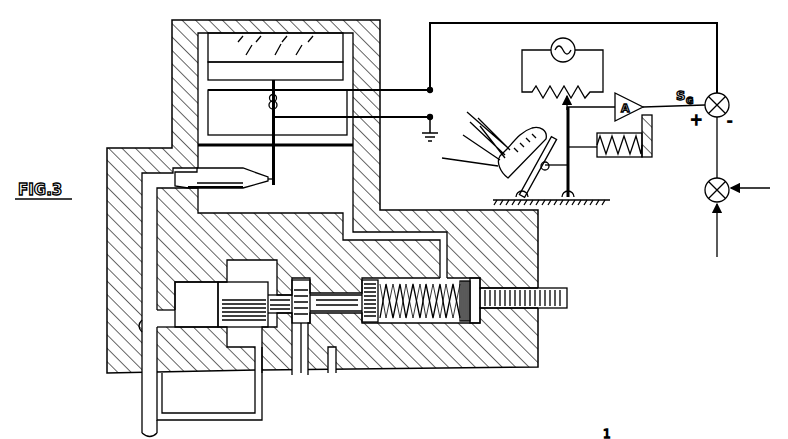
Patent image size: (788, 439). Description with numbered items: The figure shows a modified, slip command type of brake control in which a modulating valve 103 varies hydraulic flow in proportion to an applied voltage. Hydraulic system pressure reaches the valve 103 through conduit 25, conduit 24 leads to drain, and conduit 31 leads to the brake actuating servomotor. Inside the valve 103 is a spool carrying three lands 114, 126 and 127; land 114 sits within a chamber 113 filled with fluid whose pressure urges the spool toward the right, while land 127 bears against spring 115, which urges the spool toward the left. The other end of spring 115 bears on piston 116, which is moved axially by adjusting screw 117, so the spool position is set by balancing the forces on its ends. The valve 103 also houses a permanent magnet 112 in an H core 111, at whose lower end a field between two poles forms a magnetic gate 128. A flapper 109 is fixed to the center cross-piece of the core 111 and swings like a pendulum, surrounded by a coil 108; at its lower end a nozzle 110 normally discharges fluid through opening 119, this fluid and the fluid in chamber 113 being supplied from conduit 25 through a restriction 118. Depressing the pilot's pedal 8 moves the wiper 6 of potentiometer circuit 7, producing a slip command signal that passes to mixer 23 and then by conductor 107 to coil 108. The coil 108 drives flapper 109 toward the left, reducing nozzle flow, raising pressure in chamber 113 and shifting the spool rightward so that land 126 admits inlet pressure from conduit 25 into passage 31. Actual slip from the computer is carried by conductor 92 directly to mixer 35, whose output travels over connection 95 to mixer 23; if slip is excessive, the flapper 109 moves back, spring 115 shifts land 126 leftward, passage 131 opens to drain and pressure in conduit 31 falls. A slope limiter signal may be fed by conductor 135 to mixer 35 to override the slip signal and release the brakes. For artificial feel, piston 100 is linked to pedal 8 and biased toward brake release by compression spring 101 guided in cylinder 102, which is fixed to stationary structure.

The modulating valve 103 is at (186, 148).
The H core 111 is at (198, 50).
The permanent magnet 112 is at (296, 63).
The magnetic gate 128 is at (268, 130).
The coil 108 is at (278, 104).
The flapper 109 is at (277, 170).
The nozzle 110 is at (227, 189).
The opening 119 is at (273, 186).
The restriction 118 is at (141, 326).
The conduit 25 is at (143, 389).
The chamber 113 is at (193, 315).
The land 114 is at (228, 305).
The conduit 31 is at (291, 372).
The passage 131 is at (313, 350).
The conduit 24 is at (334, 372).
The land 126 is at (310, 292).
The land 127 is at (373, 323).
The spring 115 is at (415, 322).
The piston 116 is at (470, 323).
The adjusting screw 117 is at (545, 310).
The conductor 107 is at (612, 23).
The potentiometer circuit 7 is at (522, 70).
The wiper 6 is at (560, 107).
The pedal 8 is at (535, 173).
The piston 100 is at (588, 149).
The compression spring 101 is at (622, 133).
The cylinder 102 is at (645, 125).
The mixer 23 is at (730, 105).
The signal line 95 is at (717, 148).
The mixer 35 is at (706, 186).
The conductor 135 is at (737, 190).
The conductor 92 is at (716, 215).